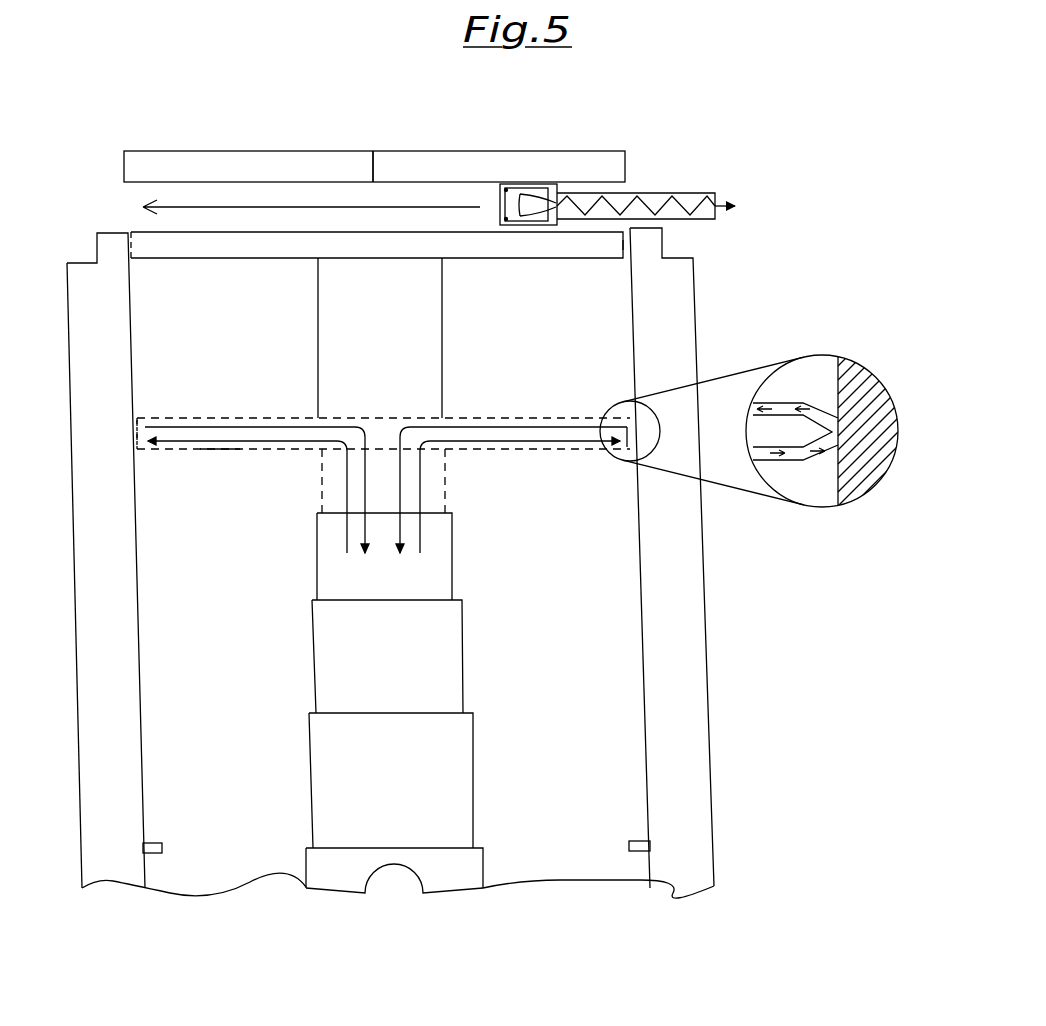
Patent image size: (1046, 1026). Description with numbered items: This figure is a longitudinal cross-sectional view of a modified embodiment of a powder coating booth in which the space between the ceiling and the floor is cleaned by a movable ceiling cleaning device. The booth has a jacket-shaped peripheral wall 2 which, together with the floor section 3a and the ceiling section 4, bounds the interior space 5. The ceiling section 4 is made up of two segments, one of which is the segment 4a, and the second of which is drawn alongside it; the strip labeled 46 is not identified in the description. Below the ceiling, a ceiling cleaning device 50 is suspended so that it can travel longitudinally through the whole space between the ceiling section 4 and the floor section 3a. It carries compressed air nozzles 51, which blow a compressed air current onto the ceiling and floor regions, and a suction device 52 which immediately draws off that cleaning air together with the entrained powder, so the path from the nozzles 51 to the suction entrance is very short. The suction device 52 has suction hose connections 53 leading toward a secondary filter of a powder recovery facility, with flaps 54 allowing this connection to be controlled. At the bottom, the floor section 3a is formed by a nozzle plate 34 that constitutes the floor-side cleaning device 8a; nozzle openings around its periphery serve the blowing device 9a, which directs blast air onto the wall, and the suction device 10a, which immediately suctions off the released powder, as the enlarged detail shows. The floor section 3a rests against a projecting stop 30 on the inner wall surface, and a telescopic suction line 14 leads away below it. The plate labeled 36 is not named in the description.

The peripheral wall 2 is at (680, 696).
The ceiling section 4 is at (374, 132).
The belt segment 46 is at (257, 170).
The segment of ceiling section 4a is at (453, 165).
The suction device 52 is at (517, 202).
The compressed air nozzles 51 is at (557, 178).
The ceiling cleaning device 50 is at (607, 162).
The suction hose connections 53 is at (563, 204).
The flaps 54 is at (628, 249).
The support plate 36 is at (527, 258).
The cleaning device 8a is at (173, 420).
The floor section 3a is at (170, 450).
The nozzle plate 34 is at (237, 452).
The suction line 14 is at (438, 798).
The stop 30 is at (637, 846).
The interior space 5 is at (558, 663).
The blowing device 9a is at (795, 453).
The suction device 10a is at (778, 402).